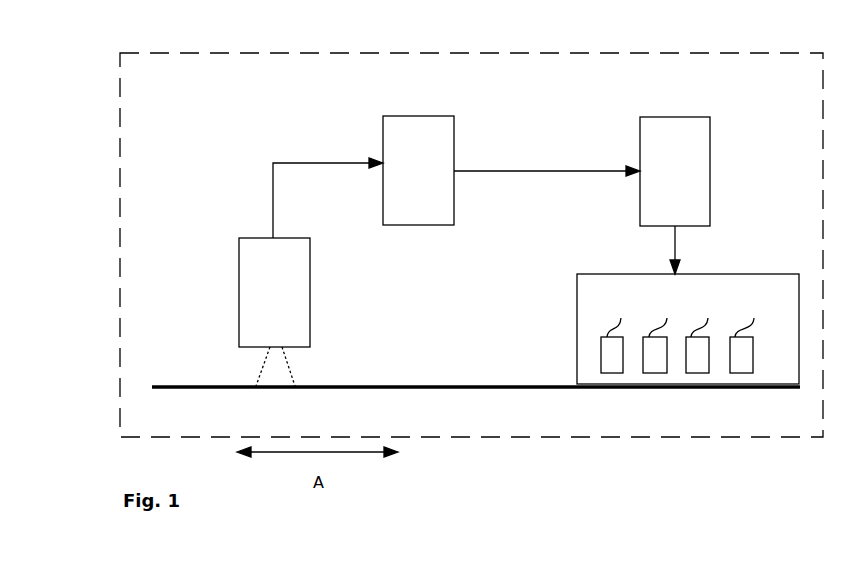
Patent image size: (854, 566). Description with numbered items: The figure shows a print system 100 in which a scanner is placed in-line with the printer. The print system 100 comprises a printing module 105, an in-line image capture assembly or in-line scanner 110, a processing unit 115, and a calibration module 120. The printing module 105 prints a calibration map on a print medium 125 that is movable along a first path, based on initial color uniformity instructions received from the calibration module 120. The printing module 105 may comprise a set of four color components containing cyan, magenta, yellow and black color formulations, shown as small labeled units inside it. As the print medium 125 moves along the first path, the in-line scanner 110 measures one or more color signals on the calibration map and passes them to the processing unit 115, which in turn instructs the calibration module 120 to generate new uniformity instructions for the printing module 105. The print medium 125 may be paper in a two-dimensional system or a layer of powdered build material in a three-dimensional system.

The print system 100 is at (126, 53).
The printing module 105 is at (752, 274).
The in-line image capture assembly 110 is at (239, 282).
The processing unit 115 is at (445, 116).
The calibration module 120 is at (688, 117).
The print medium 125 is at (220, 390).